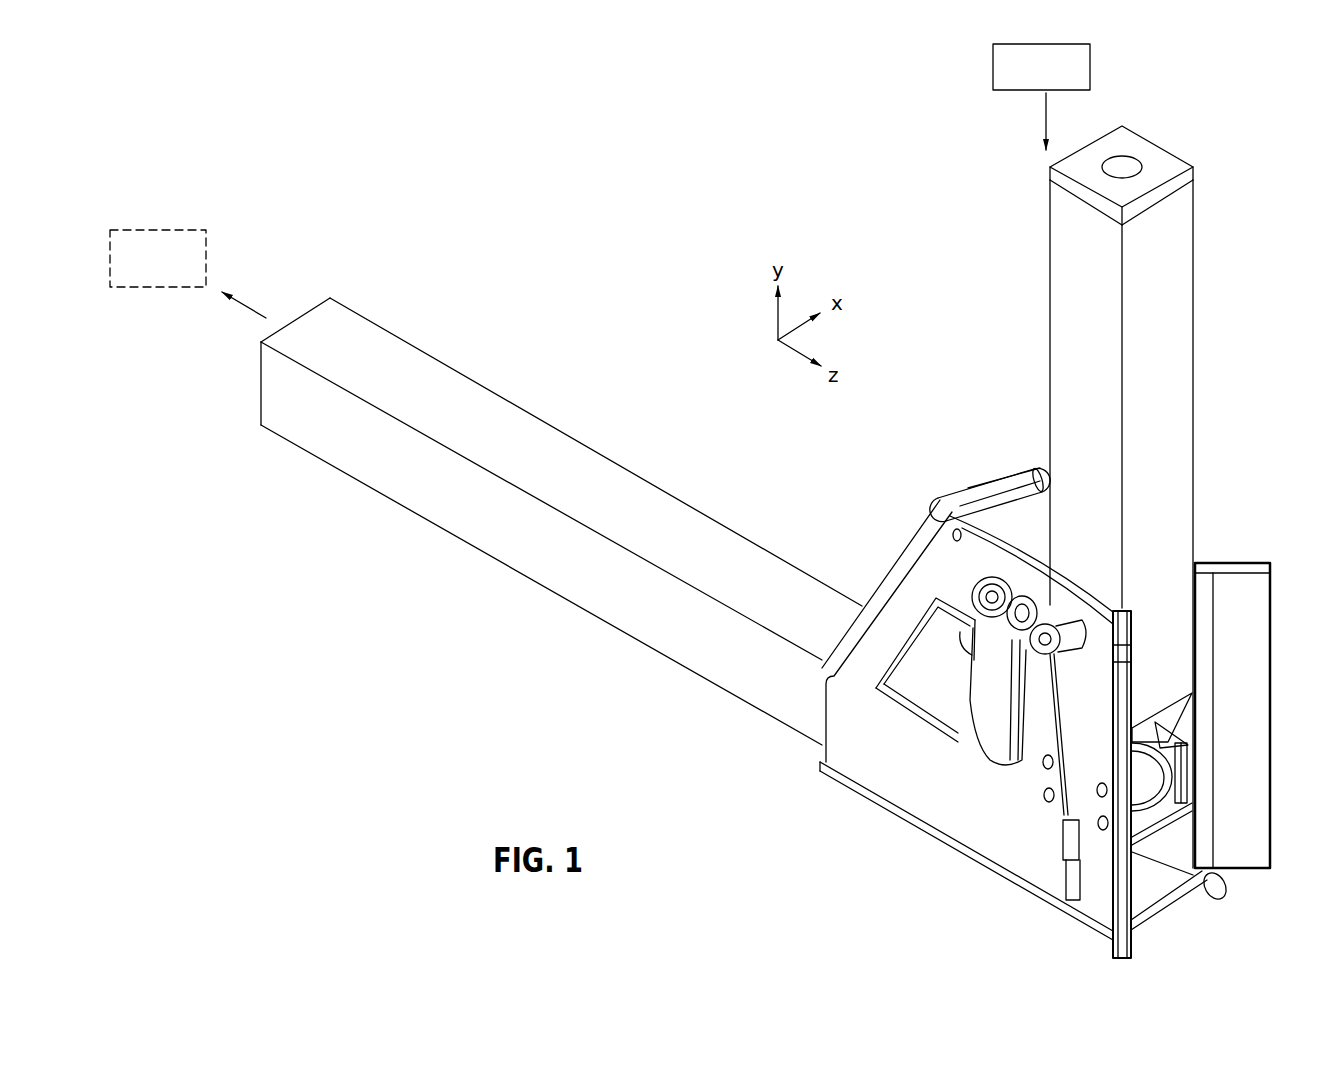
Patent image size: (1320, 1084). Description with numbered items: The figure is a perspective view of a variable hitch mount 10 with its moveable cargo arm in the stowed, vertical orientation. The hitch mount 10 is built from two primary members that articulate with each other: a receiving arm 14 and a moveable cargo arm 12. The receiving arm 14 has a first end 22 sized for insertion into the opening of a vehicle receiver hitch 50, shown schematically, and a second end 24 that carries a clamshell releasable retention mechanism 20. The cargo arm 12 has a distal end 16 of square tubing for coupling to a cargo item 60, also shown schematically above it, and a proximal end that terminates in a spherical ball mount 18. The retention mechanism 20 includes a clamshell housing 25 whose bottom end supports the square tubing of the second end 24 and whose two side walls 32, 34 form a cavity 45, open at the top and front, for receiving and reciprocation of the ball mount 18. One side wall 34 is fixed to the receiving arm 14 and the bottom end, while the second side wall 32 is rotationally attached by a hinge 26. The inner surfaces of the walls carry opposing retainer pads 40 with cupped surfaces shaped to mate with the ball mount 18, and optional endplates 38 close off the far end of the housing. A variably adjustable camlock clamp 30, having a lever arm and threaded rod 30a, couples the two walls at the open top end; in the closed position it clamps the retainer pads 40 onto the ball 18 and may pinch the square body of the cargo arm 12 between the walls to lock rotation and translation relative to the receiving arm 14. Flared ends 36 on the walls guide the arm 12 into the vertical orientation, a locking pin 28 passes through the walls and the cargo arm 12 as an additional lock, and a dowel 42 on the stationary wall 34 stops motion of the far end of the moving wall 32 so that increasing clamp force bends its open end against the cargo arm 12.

The variable hitch mount 10 is at (566, 708).
The moveable cargo arm 12 is at (1120, 497).
The receiving arm 14 is at (561, 496).
The distal end 16 is at (1048, 179).
The ball mount 18 is at (1150, 752).
The releasable retention mechanism 20 is at (966, 851).
The first end 22 is at (330, 298).
The second end 24 is at (1160, 905).
The clamshell housing 25 is at (958, 893).
The hinge 26 is at (1222, 888).
The locking pin 28 is at (1060, 636).
The variably adjustable clamp 30 is at (916, 627).
The lever arm and threaded rod 30a is at (962, 580).
The second side wall 32 is at (1196, 565).
The first side wall 34 is at (882, 762).
The flared ends 36 is at (1226, 586).
The endplates 38 is at (945, 464).
The retainer pads 40 is at (1188, 776).
The dowel 42 is at (1010, 497).
The cavity 45 is at (1195, 718).
The vehicle receiver hitch 50 is at (208, 262).
The cargo item 60 is at (991, 78).